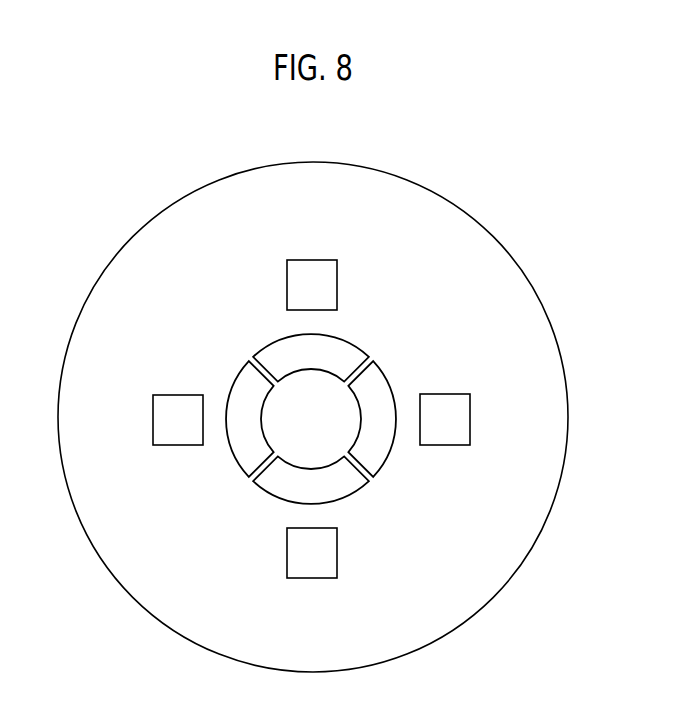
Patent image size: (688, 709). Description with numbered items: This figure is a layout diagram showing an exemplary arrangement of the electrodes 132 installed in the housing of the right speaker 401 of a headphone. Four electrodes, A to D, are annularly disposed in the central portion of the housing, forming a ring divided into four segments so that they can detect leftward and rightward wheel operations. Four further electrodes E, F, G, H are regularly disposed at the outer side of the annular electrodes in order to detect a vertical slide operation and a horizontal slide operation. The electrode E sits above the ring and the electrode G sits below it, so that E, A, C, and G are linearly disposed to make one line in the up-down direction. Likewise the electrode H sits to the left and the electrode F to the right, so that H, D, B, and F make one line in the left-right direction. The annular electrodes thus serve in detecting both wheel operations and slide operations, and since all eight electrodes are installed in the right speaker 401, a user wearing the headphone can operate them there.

The right speaker 401 is at (316, 162).
The electrodes 132 is at (408, 321).
The electrode E is at (312, 285).
The electrode F is at (445, 419).
The electrode G is at (312, 553).
The electrode H is at (178, 420).